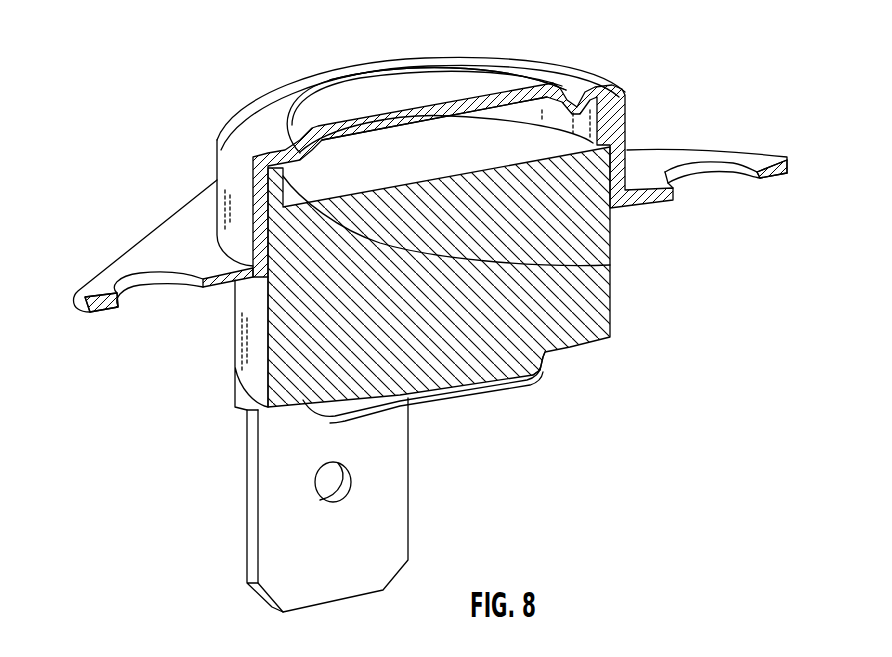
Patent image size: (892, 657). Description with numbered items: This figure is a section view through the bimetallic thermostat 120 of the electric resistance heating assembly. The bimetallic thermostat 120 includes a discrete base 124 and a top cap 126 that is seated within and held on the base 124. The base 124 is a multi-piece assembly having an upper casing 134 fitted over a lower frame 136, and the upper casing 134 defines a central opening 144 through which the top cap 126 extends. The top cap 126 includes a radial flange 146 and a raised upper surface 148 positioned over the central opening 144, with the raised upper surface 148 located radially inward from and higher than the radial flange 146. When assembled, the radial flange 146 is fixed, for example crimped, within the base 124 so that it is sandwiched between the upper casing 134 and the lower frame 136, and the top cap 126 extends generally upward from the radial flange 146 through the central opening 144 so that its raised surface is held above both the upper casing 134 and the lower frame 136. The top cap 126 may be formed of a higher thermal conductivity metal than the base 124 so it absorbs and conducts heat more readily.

The bimetallic thermostat 120 is at (627, 370).
The base 124 is at (612, 325).
The top cap 126 is at (293, 108).
The upper casing 134 is at (223, 203).
The lower frame 136 is at (565, 322).
The central opening 144 is at (483, 128).
The radial flange 146 is at (610, 265).
The raised upper surface 148 is at (500, 83).